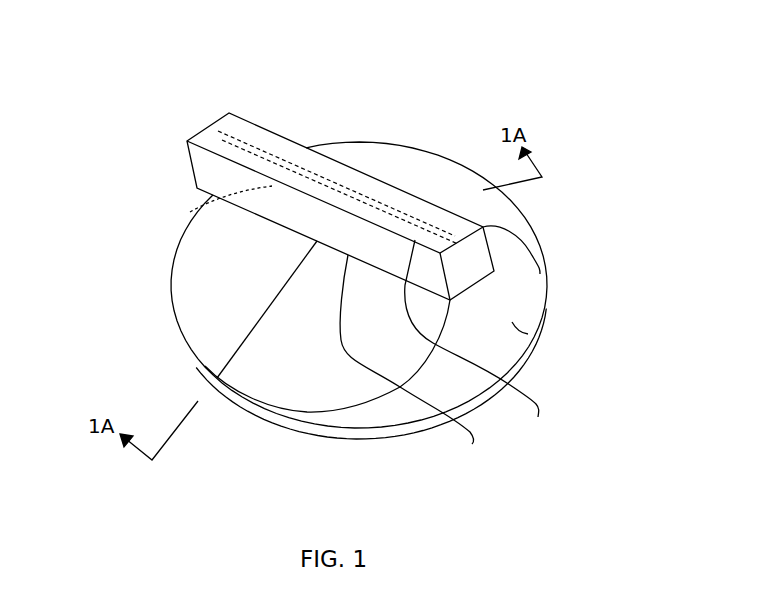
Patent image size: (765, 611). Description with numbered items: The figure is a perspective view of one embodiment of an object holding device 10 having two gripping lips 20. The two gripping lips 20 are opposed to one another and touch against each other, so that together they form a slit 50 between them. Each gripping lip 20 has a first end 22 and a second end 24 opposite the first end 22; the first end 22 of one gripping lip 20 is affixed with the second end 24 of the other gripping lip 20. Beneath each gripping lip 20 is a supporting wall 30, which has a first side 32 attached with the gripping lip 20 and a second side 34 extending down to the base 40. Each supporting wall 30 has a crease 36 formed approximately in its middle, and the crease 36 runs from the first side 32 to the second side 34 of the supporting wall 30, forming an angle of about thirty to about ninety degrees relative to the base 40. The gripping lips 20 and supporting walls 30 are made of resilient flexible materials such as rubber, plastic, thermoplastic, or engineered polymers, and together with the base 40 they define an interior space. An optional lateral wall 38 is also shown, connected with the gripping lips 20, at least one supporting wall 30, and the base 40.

The object holding device 10 is at (375, 275).
The gripping lips 20 is at (359, 235).
The first end 22 is at (205, 122).
The second end 24 is at (243, 131).
The slit 50 is at (293, 162).
The supporting wall 30 is at (389, 165).
The first side 32 is at (413, 363).
The second side 34 is at (437, 180).
The crease 36 is at (188, 333).
The lateral wall 38 is at (543, 318).
The base 40 is at (372, 430).